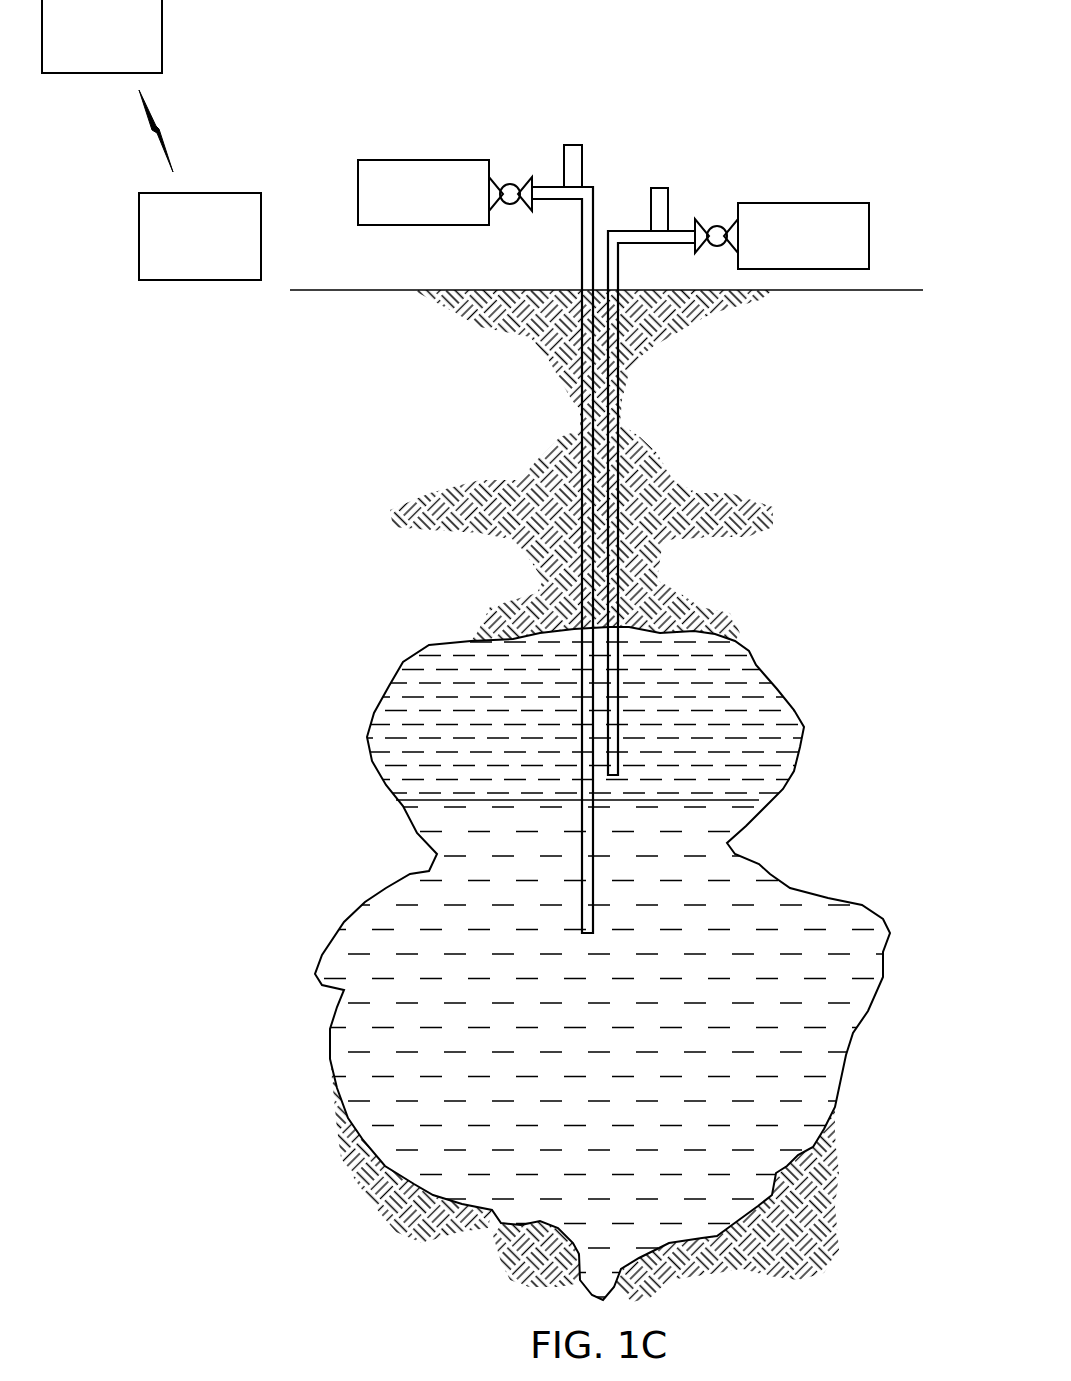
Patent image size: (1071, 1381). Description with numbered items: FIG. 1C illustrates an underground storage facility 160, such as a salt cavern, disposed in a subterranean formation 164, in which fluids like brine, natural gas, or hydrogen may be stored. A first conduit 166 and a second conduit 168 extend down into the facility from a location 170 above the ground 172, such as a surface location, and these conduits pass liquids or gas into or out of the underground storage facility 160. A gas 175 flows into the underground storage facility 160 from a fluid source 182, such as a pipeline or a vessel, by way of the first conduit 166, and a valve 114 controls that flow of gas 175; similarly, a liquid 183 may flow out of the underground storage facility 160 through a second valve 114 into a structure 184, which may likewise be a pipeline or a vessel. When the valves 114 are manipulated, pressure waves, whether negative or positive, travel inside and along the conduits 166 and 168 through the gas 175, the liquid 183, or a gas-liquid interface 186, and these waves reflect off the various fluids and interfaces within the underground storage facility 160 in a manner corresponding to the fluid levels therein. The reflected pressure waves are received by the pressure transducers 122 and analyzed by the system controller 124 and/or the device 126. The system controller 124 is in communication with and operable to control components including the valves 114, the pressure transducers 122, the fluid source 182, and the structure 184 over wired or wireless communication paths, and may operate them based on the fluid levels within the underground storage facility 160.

The valve 114 is at (513, 184).
The pressure transducer 122 is at (568, 145).
The system controller 124 is at (180, 250).
The device 126 is at (82, 44).
The underground storage facility 160 is at (459, 623).
The subterranean formation 164 is at (751, 586).
The first conduit 166 is at (620, 400).
The second conduit 168 is at (580, 418).
The location 170 is at (449, 83).
The ground 172 is at (903, 285).
The gas 175 is at (399, 687).
The fluid source 182 is at (783, 250).
The structure 184 is at (403, 206).
The liquid 183 is at (496, 1212).
The gas-liquid interface 186 is at (747, 802).